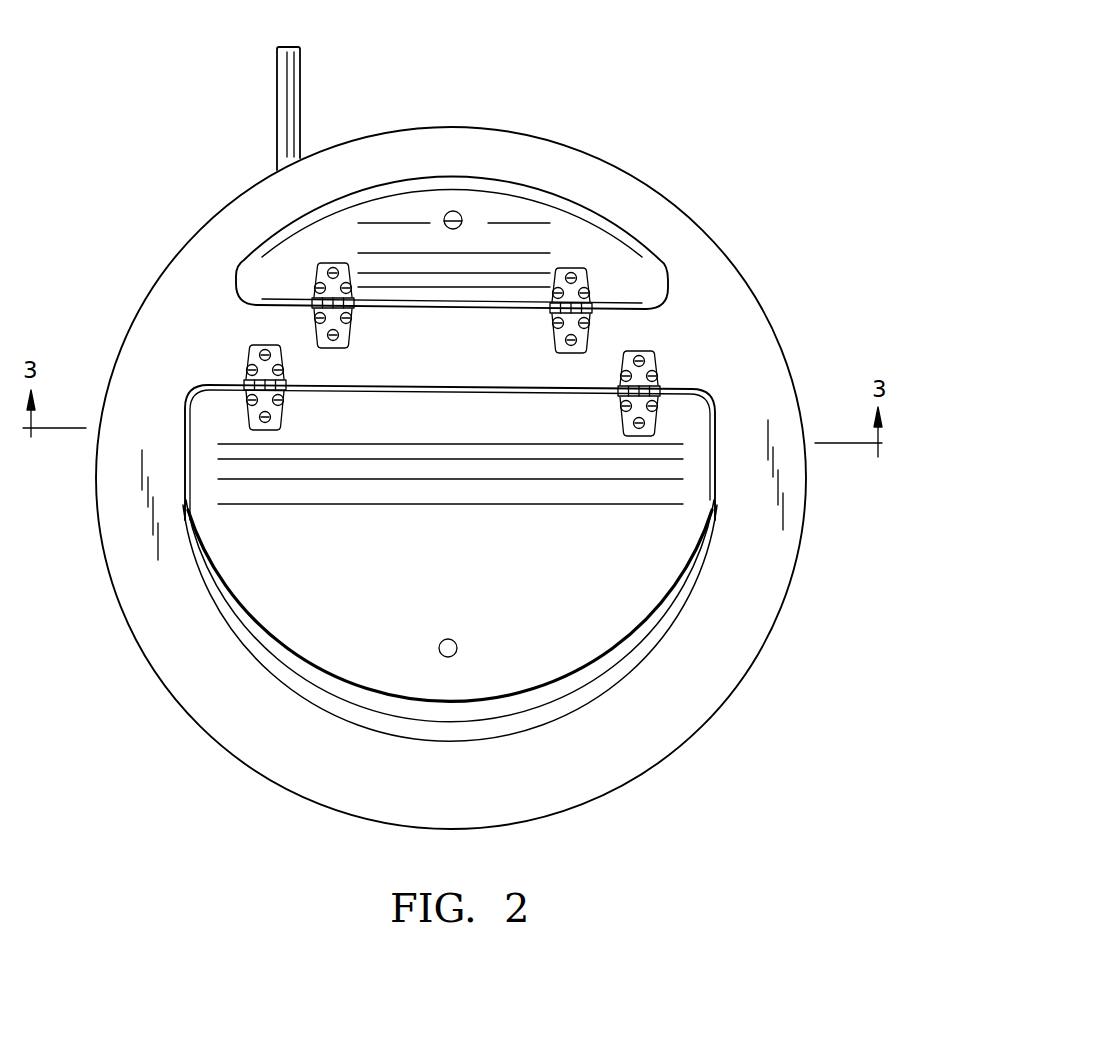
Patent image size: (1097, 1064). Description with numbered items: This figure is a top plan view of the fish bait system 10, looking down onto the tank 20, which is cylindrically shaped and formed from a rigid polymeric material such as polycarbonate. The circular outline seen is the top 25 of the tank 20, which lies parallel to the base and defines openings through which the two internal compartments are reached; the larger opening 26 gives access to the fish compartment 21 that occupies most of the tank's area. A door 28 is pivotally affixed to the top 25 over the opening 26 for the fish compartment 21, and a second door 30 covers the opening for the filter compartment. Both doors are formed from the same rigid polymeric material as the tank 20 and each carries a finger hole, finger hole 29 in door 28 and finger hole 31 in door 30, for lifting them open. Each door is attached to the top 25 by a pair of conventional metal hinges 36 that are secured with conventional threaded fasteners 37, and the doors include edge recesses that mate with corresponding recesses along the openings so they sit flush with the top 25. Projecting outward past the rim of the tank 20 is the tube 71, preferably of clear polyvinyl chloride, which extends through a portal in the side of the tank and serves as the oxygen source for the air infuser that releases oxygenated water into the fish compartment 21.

The fish bait system 10 is at (733, 80).
The tank 20 is at (770, 719).
The fish compartment 21 is at (420, 698).
The top 25 is at (748, 605).
The opening 26 is at (527, 714).
The door 28 is at (463, 586).
The finger hole 29 is at (460, 633).
The door 30 is at (238, 263).
The finger hole 31 is at (459, 200).
The metal hinges 36 is at (317, 273).
The threaded fasteners 37 is at (262, 340).
The tube 71 is at (280, 101).